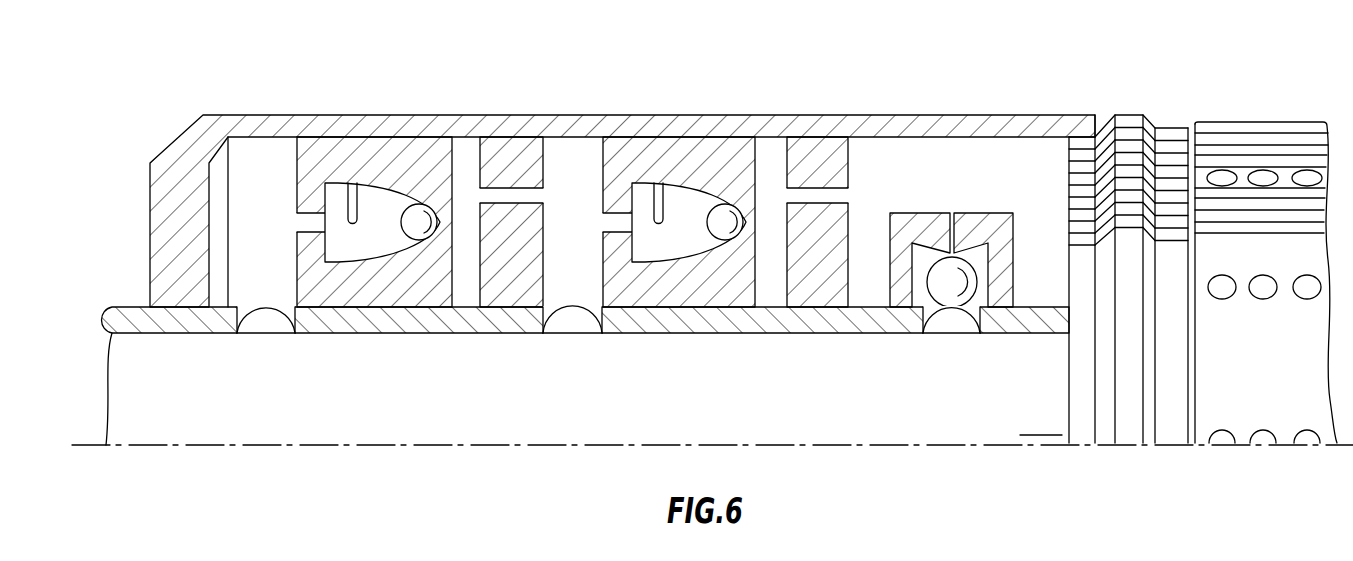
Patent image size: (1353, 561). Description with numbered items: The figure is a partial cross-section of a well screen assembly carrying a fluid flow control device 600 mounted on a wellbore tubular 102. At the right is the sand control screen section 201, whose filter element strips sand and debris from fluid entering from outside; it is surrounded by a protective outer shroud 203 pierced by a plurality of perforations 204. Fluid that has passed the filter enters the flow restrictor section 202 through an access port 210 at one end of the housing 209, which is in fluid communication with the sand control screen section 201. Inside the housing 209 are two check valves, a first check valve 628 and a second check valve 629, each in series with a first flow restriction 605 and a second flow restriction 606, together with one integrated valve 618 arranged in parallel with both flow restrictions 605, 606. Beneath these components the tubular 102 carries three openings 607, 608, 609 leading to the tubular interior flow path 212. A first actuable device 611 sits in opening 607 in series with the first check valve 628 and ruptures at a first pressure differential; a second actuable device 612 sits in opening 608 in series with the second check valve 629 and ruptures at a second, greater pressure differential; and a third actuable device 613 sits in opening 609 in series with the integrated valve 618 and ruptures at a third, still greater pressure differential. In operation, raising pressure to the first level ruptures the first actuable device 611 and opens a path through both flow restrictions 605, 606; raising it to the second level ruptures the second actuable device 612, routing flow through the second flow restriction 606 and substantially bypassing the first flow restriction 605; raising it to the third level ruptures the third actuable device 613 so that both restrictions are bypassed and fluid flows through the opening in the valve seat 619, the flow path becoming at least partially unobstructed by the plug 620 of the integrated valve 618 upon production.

The fluid flow control device 600 is at (173, 90).
The wellbore tubular 102 is at (187, 335).
The housing 209 is at (940, 114).
The first check valve 628 is at (387, 137).
The first flow restriction 605 is at (514, 137).
The second check valve 629 is at (677, 137).
The second flow restriction 606 is at (818, 137).
The valve seat 619 is at (948, 211).
The integrated valve 618 is at (1015, 228).
The plug 620 is at (972, 265).
The opening 607 is at (252, 338).
The opening 608 is at (557, 338).
The opening 609 is at (936, 338).
The first actuable device 611 is at (272, 325).
The second actuable device 612 is at (578, 327).
The third actuable device 613 is at (960, 325).
The access port 210 is at (1072, 282).
The flow restrictor section 202 is at (1032, 108).
The sand control screen section 201 is at (1185, 110).
The protective outer shroud 203 is at (1265, 133).
The perforations 204 is at (1297, 165).
The tubular interior flow path 212 is at (1041, 421).